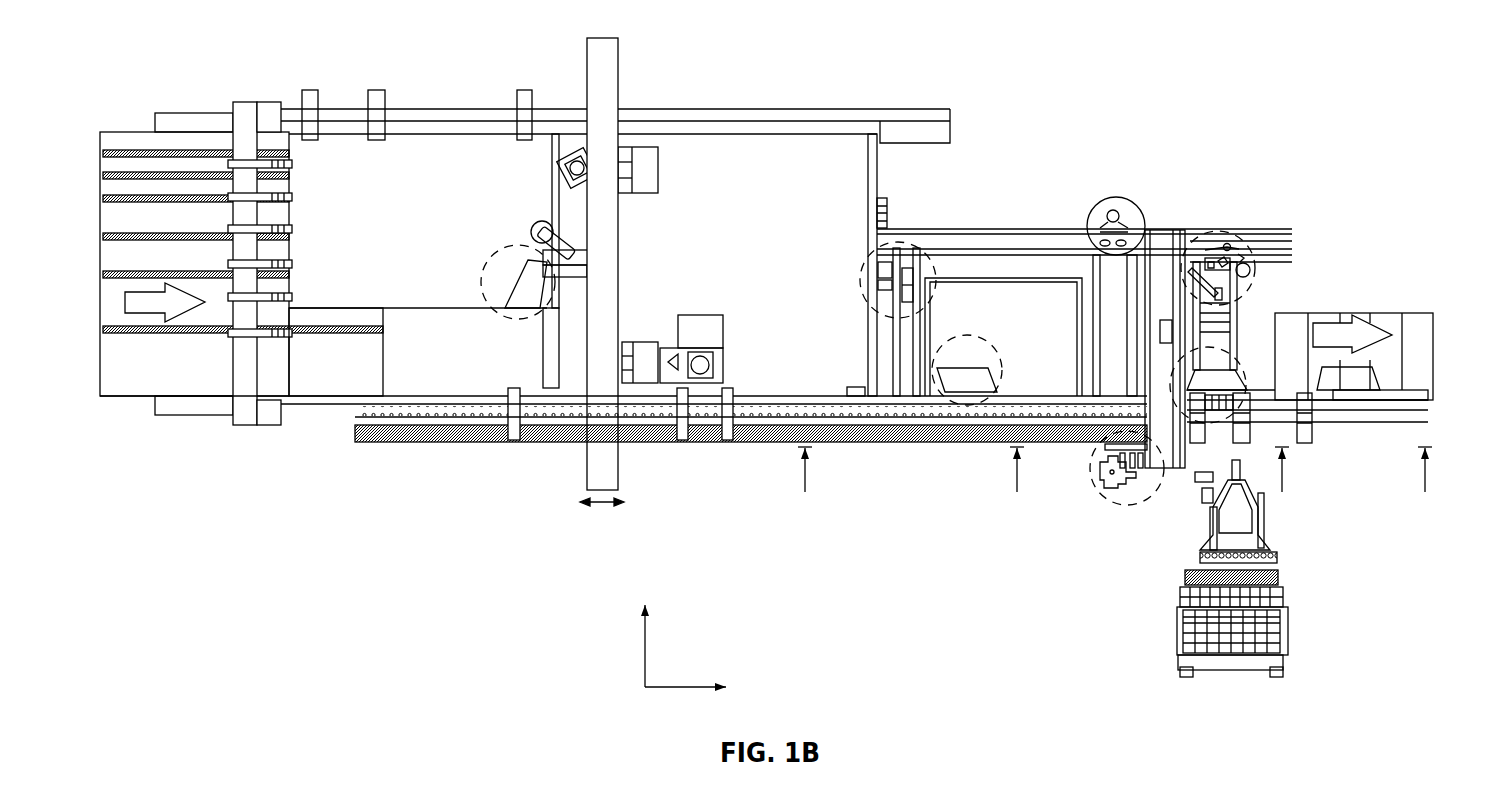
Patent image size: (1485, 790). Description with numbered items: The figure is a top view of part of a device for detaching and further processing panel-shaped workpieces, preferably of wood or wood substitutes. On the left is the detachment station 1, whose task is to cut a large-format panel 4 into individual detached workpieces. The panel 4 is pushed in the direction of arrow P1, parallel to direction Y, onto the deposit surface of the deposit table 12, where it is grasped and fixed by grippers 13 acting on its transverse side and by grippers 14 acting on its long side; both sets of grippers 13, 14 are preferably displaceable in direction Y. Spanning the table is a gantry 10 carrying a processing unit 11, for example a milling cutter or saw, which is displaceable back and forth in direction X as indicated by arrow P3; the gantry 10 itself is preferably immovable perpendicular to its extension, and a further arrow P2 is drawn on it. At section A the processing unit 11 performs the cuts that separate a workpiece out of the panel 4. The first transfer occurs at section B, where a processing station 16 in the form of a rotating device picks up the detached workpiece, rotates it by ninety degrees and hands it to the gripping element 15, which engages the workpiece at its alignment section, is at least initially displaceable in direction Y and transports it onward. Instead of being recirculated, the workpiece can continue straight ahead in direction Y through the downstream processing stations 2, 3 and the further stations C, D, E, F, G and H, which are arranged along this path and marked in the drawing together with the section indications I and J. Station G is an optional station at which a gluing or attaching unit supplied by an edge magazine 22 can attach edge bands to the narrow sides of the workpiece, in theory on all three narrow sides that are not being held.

The detachment station 1 is at (370, 40).
The processing station 2 is at (1057, 308).
The processing station 3 is at (1322, 323).
The large-format panel 4 is at (420, 157).
The gantry 10 is at (618, 70).
The processing unit 11 is at (578, 240).
The deposit table 12 is at (318, 375).
The grippers 13 is at (258, 90).
The grippers 14 is at (525, 80).
The gripping element 15 is at (685, 448).
The processing station 16 is at (738, 330).
The edge magazine 22 is at (1300, 635).
The detachment section A is at (500, 255).
The transfer section B is at (735, 372).
The station C is at (875, 258).
The station D is at (995, 360).
The station E is at (1227, 362).
The station F is at (1095, 478).
The station G is at (1228, 237).
The station H is at (1345, 428).
The section I is at (1285, 470).
The section J is at (803, 470).
The arrow P1 is at (150, 313).
The wall movement direction P2 is at (600, 505).
The arrow P3 is at (614, 250).